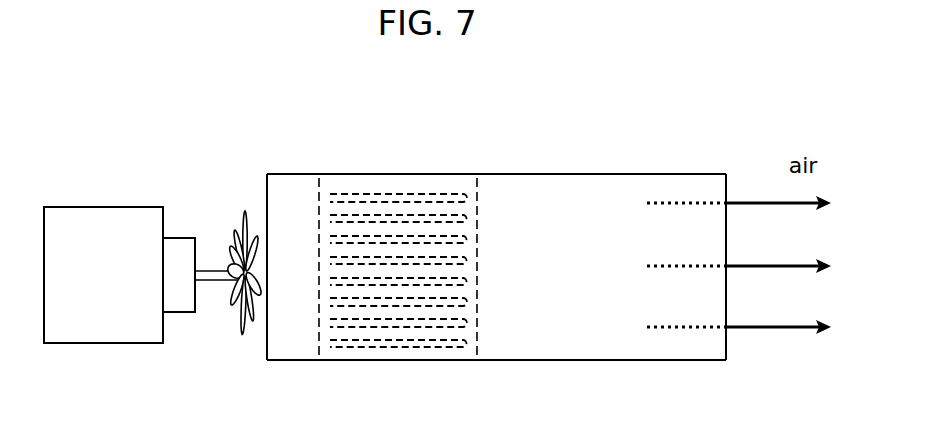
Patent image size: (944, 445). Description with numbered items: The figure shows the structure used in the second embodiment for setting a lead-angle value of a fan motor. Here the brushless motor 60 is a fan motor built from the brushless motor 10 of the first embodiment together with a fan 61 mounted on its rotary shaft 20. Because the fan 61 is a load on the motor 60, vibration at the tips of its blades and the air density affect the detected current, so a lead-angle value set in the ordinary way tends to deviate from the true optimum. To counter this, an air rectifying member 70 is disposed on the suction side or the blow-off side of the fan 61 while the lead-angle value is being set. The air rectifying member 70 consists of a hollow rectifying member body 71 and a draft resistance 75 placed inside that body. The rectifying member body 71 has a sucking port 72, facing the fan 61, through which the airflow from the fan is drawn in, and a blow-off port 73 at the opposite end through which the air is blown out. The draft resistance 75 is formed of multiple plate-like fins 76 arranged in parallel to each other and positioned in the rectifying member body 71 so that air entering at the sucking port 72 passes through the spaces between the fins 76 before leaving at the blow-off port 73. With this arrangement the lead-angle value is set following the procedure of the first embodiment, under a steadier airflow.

The brushless motor 10 is at (88, 207).
The rotary shaft 20 is at (222, 272).
The brushless motor 60 is at (223, 119).
The fan 61 is at (239, 210).
The air rectifying member 70 is at (540, 170).
The rectifying member body 71 is at (622, 172).
The sucking port 72 is at (265, 353).
The blow-off port 73 is at (727, 342).
The draft resistance 75 is at (403, 185).
The plate-like fins 76 is at (337, 195).